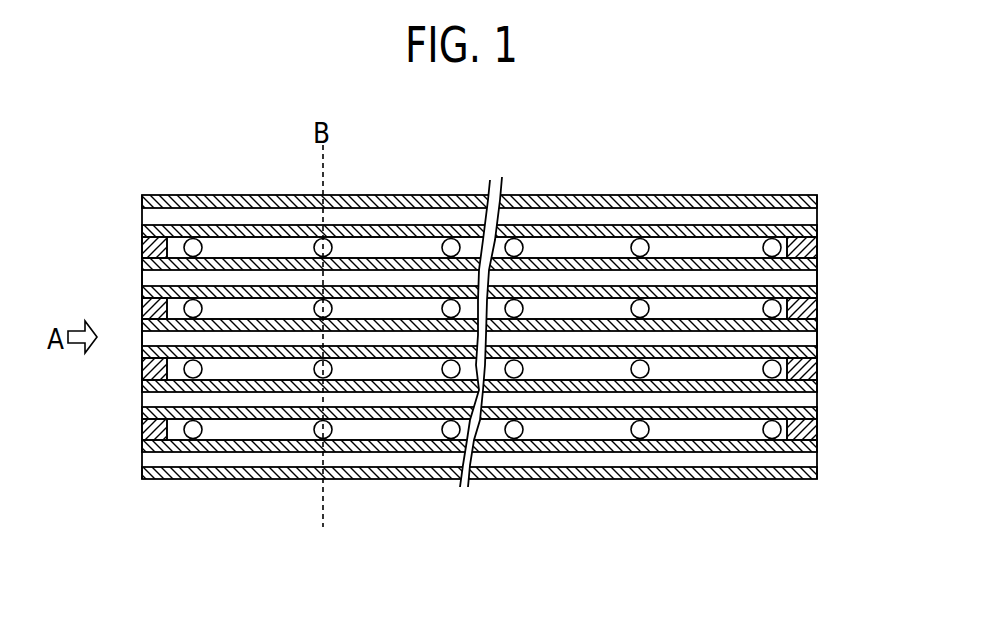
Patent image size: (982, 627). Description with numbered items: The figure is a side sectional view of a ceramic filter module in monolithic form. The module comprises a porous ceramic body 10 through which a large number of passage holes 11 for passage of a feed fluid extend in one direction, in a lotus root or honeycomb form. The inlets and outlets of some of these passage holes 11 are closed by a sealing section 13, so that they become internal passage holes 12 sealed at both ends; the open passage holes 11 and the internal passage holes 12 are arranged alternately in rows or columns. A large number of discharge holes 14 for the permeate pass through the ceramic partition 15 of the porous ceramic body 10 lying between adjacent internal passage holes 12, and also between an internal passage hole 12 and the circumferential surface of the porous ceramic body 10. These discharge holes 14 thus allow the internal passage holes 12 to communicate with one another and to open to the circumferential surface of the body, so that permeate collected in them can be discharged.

The porous ceramic body 10 is at (609, 194).
The passage holes 11 is at (243, 277).
The internal passage holes 12 is at (233, 367).
The sealing section 13 is at (142, 372).
The discharge holes 14 is at (450, 239).
The ceramic partition 15 is at (177, 338).